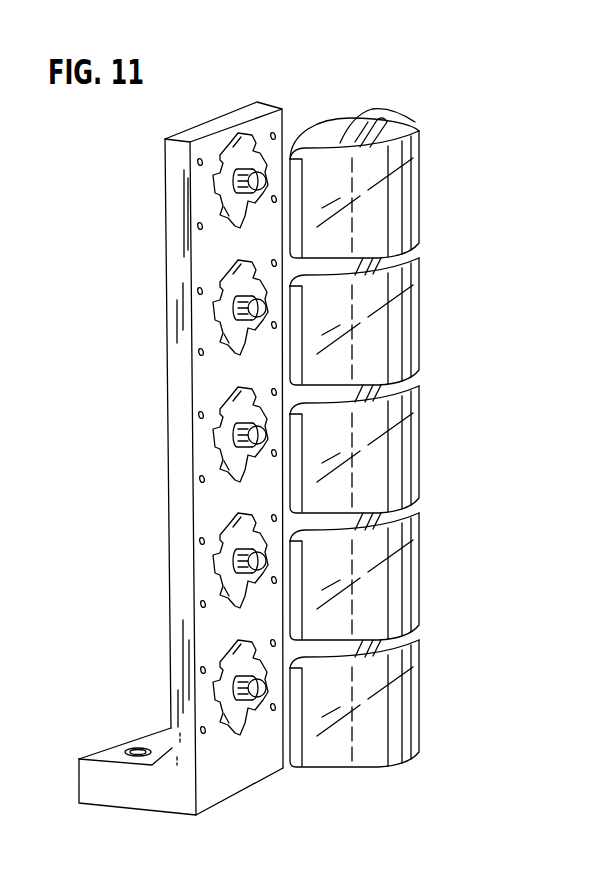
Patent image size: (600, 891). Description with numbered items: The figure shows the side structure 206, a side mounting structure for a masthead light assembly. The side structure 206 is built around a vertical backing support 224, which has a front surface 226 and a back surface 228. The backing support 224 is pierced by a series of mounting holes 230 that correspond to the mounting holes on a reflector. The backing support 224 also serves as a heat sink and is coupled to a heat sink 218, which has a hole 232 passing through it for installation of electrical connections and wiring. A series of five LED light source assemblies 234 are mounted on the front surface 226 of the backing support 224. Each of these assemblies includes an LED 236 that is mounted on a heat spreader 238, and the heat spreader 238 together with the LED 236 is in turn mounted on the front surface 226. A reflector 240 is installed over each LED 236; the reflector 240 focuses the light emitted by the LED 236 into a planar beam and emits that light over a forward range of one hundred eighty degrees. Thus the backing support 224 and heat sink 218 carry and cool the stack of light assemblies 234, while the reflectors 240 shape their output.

The side structure 206 is at (142, 179).
The heat sink 218 is at (112, 797).
The vertical backing support 224 is at (259, 173).
The front surface 226 is at (206, 322).
The back surface 228 is at (169, 492).
The mounting holes 230 is at (201, 544).
The hole 232 is at (131, 747).
The LED light source assemblies 234 is at (415, 122).
The LED 236 is at (366, 111).
The heat spreader 238 is at (221, 192).
The reflector 240 is at (396, 217).